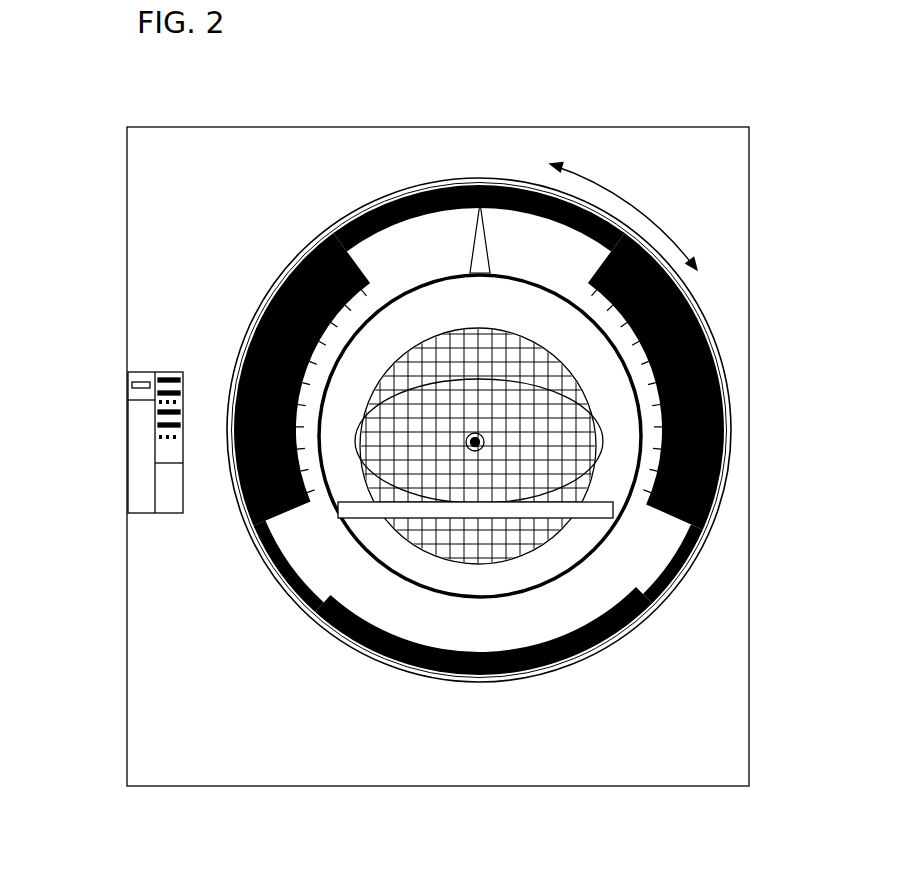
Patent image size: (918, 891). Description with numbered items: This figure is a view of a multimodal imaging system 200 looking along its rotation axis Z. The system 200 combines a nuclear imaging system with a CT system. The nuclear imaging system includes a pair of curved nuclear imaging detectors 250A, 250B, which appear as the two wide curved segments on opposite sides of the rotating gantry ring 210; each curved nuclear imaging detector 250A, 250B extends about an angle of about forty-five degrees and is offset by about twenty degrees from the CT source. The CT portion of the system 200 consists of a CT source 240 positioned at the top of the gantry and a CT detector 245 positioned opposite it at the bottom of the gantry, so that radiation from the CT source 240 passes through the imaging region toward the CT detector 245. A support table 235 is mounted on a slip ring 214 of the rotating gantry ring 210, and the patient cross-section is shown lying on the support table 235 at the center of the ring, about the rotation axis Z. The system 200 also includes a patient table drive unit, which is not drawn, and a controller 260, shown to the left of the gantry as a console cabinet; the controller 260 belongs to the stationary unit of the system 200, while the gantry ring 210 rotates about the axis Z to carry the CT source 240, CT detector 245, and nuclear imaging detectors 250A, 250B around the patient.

The multimodal imaging system 200 is at (408, 18).
The rotating gantry ring 210 is at (700, 303).
The slip ring 214 is at (503, 187).
The support table 235 is at (575, 518).
The CT source 240 is at (471, 251).
The CT detector 245 is at (437, 680).
The curved nuclear imaging detector 250A is at (243, 352).
The curved nuclear imaging detector 250B is at (729, 452).
The controller 260 is at (128, 467).
The rotation axis Z is at (470, 445).